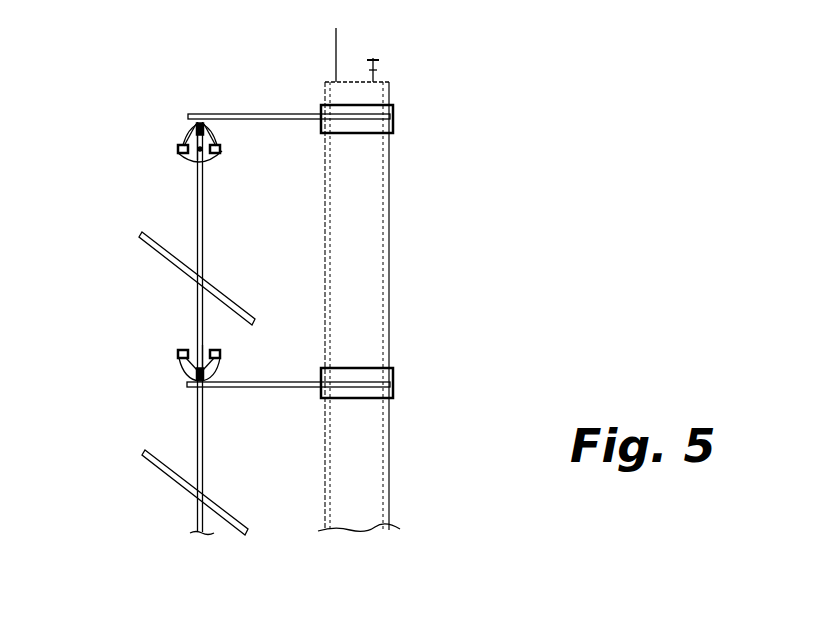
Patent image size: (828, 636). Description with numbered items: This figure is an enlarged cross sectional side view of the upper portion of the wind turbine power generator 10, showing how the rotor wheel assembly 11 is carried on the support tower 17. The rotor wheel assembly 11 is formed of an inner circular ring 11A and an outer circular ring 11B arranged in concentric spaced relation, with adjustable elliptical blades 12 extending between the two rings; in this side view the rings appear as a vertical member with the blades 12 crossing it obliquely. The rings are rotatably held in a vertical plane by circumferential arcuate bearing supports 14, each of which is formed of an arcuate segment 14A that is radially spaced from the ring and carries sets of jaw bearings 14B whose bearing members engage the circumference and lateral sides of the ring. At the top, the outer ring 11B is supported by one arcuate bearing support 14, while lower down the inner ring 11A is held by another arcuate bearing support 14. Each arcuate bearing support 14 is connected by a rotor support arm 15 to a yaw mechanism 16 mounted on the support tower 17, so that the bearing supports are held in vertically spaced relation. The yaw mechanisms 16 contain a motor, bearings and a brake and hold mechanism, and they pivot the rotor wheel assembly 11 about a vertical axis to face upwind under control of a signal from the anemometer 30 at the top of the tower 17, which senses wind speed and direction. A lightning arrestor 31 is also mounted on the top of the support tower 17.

The wind turbine power generator 10 is at (494, 229).
The rotor wheel assembly 11 is at (130, 302).
The inner circular ring 11A is at (197, 352).
The outer circular ring 11B is at (197, 152).
The adjustable elliptical blades 12 is at (218, 288).
The circumferential arcuate bearing supports 14 is at (138, 248).
The arcuate segments 14A is at (190, 140).
The jaw bearings 14B is at (183, 148).
The rotor support arms 15 is at (249, 113).
The yaw mechanisms 16 is at (393, 130).
The support tower 17 is at (391, 283).
The anemometer 30 is at (378, 62).
The lightning arrestor 31 is at (336, 44).